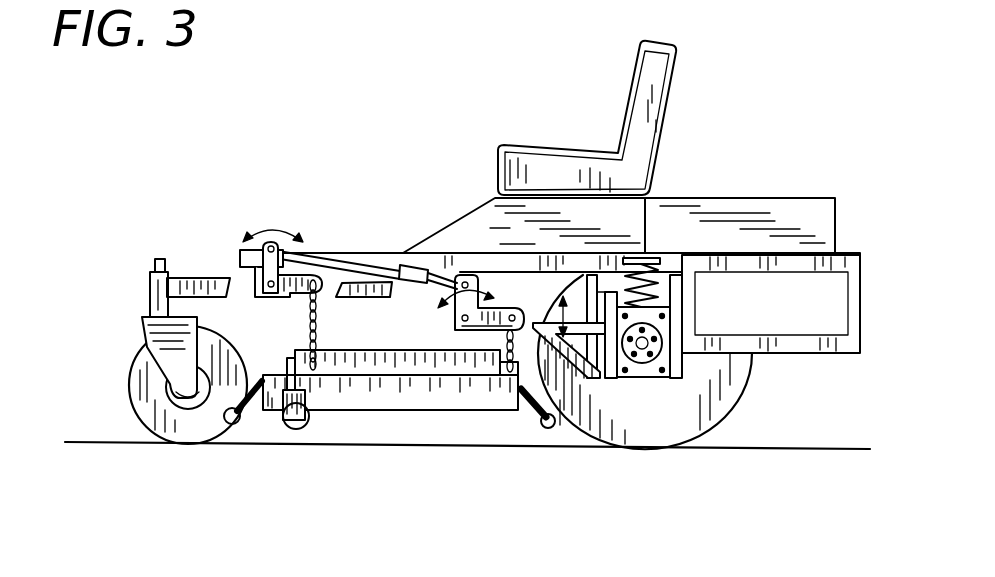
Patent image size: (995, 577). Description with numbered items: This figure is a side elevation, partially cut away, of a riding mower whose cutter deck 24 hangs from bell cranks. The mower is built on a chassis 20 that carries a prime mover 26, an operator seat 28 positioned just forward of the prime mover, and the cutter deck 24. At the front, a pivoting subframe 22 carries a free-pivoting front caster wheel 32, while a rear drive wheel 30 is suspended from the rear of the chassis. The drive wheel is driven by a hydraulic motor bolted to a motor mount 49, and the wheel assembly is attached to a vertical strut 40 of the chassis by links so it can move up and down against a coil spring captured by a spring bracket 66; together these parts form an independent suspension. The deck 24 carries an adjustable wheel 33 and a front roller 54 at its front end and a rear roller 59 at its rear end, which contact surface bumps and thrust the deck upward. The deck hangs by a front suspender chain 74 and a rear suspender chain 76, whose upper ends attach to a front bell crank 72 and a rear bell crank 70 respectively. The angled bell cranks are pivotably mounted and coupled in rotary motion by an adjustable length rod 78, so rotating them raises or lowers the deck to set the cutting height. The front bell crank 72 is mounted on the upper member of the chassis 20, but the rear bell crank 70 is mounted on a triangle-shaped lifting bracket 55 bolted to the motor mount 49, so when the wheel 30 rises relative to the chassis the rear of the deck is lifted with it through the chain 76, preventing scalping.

The chassis 20 is at (861, 253).
The subframe 22 is at (193, 278).
The cutter deck 24 is at (400, 410).
The prime mover 26 is at (765, 198).
The operator seat 28 is at (658, 78).
The rear drive wheel 30 is at (717, 393).
The front caster wheel 32 is at (140, 372).
The adjustable wheel 33 is at (292, 430).
The vertical strut 40 is at (693, 293).
The motor mount 49 is at (693, 337).
The front roller 54 is at (230, 424).
The lifting bracket 55 is at (550, 318).
The rear roller 59 is at (547, 430).
The spring bracket 66 is at (650, 260).
The rear bell crank 70 is at (500, 272).
The front bell crank 72 is at (240, 250).
The front suspender chain 74 is at (350, 376).
The rear suspender chain 76 is at (502, 343).
The adjustable length rod 78 is at (355, 258).